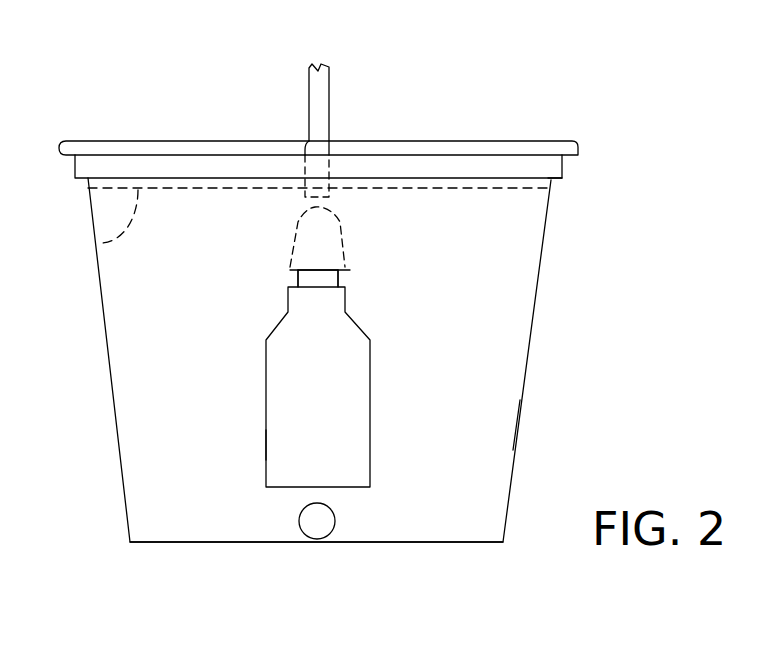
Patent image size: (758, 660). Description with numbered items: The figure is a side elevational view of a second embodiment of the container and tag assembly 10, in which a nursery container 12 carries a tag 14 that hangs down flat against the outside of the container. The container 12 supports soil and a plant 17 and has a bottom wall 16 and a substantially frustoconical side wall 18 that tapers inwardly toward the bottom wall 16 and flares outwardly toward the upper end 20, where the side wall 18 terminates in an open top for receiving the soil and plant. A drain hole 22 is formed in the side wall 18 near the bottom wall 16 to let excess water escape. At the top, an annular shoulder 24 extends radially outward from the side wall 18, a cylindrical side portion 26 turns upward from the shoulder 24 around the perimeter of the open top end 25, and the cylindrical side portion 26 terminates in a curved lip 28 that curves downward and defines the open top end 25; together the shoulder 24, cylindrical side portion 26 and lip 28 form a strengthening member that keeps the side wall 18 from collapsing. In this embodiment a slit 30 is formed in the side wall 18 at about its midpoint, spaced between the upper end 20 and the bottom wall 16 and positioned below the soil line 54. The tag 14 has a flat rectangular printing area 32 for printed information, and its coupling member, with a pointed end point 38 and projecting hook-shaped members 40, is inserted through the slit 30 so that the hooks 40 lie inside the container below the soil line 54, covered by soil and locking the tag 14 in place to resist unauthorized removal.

The assembly 10 is at (493, 58).
The container 12 is at (534, 309).
The tag 14 is at (356, 388).
The bottom wall 16 is at (430, 545).
The plant 17 is at (330, 104).
The side wall 18 is at (523, 408).
The upper end 20 is at (88, 178).
The drain hole 22 is at (335, 521).
The annular shoulder 24 is at (553, 182).
The open top end 25 is at (497, 141).
The cylindrical side portion 26 is at (564, 171).
The lip 28 is at (580, 151).
The slit 30 is at (316, 271).
The printing area 32 is at (291, 437).
The end point 38 is at (323, 208).
The hook-shaped members 40 is at (352, 270).
The soil line 54 is at (105, 243).